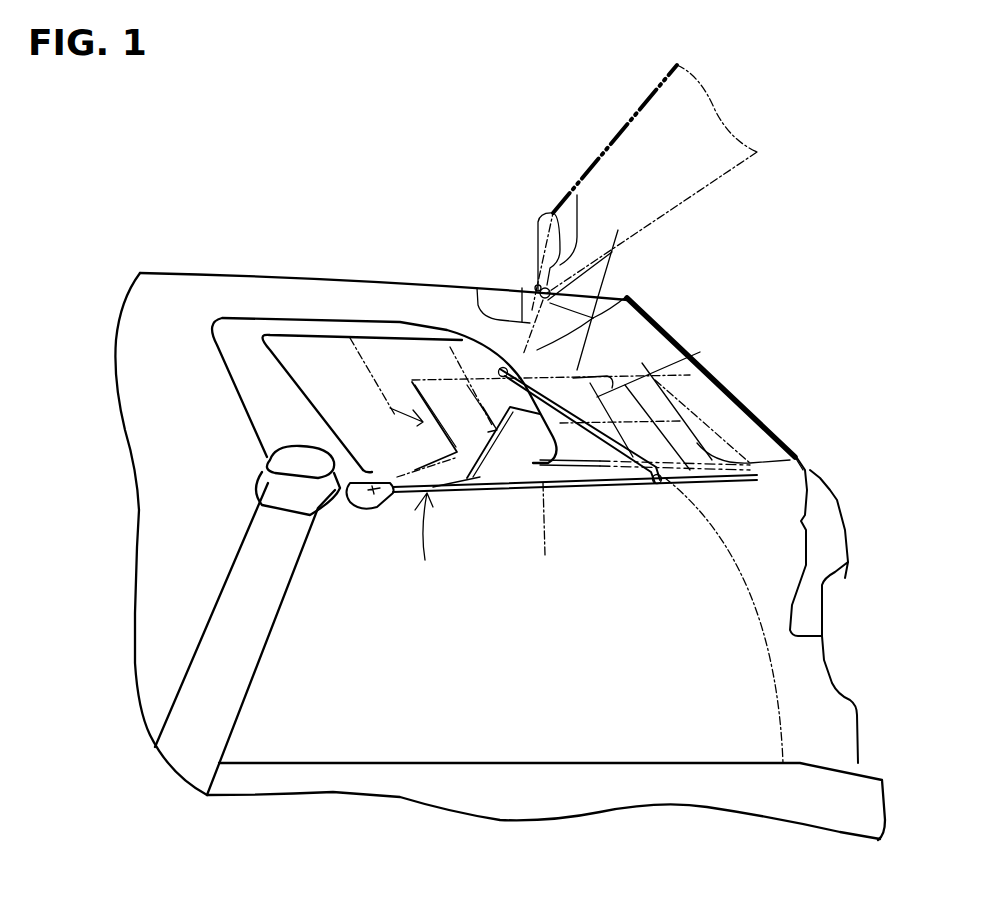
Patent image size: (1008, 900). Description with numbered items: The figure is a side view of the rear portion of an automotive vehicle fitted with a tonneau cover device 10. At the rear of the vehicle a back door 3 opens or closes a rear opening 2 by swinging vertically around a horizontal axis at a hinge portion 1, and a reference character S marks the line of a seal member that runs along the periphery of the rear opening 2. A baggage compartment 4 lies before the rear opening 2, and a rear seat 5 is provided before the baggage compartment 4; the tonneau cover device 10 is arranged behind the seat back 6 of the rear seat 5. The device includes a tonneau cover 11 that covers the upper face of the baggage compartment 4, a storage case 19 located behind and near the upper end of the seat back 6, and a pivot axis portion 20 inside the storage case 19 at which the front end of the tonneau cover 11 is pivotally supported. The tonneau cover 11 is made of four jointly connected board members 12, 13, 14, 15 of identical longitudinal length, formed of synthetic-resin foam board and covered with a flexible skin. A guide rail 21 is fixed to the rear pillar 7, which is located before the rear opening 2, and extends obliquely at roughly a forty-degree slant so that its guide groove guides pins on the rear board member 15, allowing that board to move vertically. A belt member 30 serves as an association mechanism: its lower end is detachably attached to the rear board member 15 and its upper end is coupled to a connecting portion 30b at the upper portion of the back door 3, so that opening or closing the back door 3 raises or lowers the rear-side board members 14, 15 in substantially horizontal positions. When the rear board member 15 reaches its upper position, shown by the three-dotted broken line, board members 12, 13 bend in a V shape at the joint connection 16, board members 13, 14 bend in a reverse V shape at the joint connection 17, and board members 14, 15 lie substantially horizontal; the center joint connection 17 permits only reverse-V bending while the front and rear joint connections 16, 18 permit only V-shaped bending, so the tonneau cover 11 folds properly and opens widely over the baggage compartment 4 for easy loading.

The hinge portion 1 is at (537, 290).
The rear opening 2 is at (708, 393).
The back door 3 is at (618, 125).
The baggage compartment 4 is at (527, 670).
The rear seat 5 is at (233, 520).
The seat back 6 is at (285, 567).
The rear pillar 7 is at (633, 301).
The tonneau cover device 10 is at (768, 503).
The tonneau cover 11 is at (390, 408).
The front board member 12 is at (450, 490).
The board member 13 is at (510, 487).
The board member 14 is at (603, 490).
The rear board member 15 is at (677, 490).
The joint connection 16 is at (447, 450).
The joint connection 17 is at (350, 338).
The joint connection 18 is at (447, 333).
The storage case 19 is at (367, 470).
The pivot axis portion 20 is at (373, 500).
The guide rail 21 is at (633, 487).
The belt member 30 is at (612, 268).
The connecting portion 30b is at (700, 352).
The line of seal member S is at (763, 643).